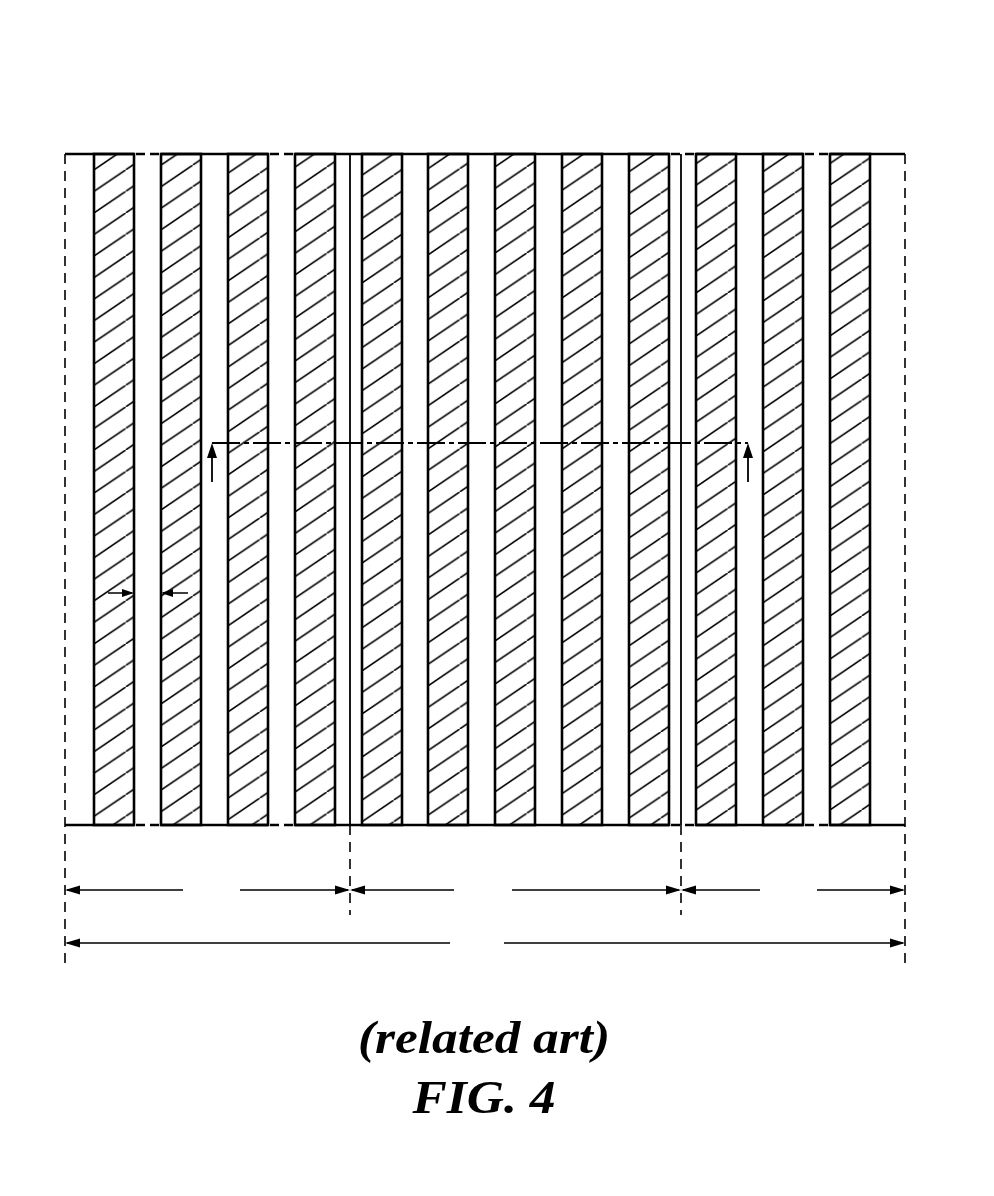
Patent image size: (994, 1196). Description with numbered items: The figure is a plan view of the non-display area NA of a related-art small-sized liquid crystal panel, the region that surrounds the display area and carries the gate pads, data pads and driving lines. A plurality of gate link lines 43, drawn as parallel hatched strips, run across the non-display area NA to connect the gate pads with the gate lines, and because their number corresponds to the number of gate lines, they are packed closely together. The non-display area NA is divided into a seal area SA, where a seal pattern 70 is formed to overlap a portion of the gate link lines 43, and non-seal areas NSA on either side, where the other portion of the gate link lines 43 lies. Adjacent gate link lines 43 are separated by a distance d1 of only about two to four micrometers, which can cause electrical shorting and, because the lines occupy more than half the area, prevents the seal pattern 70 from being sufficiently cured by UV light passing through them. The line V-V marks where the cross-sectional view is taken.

The seal pattern 70 is at (517, 432).
The gate link lines 43 is at (592, 432).
The line V- V is at (482, 481).
The distance between adjacent two gate link lines d1 is at (148, 580).
The non-seal area NSA is at (485, 890).
The seal area SA is at (515, 890).
The non-display area NA is at (485, 948).